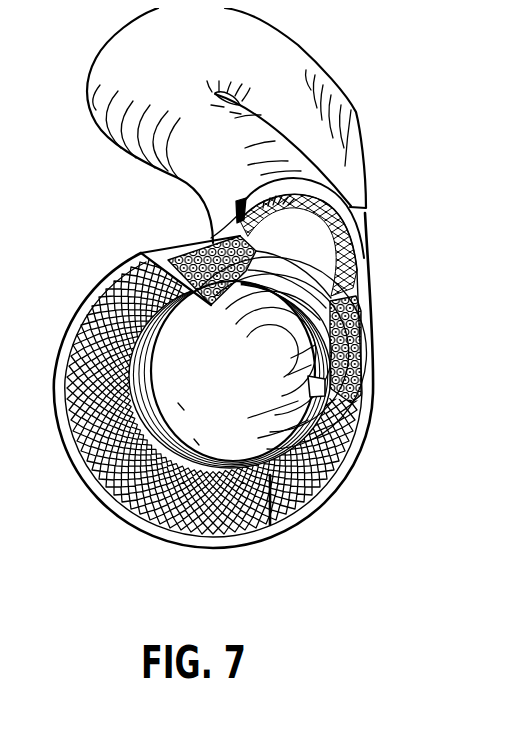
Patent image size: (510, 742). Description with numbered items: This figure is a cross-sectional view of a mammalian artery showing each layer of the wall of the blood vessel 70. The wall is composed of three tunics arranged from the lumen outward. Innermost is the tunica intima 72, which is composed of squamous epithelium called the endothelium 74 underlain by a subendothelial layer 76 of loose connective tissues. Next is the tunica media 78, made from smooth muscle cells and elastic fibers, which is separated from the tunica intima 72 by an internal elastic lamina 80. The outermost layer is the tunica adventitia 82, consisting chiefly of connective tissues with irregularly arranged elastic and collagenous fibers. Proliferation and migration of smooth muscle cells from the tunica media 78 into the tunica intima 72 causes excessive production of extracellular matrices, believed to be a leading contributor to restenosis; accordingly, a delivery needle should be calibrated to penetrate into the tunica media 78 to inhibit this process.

The blood vessel 70 is at (247, 343).
The tunica intima 72 is at (300, 388).
The endothelium 74 is at (299, 397).
The subendothelial layer 76 is at (302, 412).
The tunica media 78 is at (268, 480).
The internal elastic lamina 80 is at (300, 440).
The tunica adventitia 82 is at (262, 530).